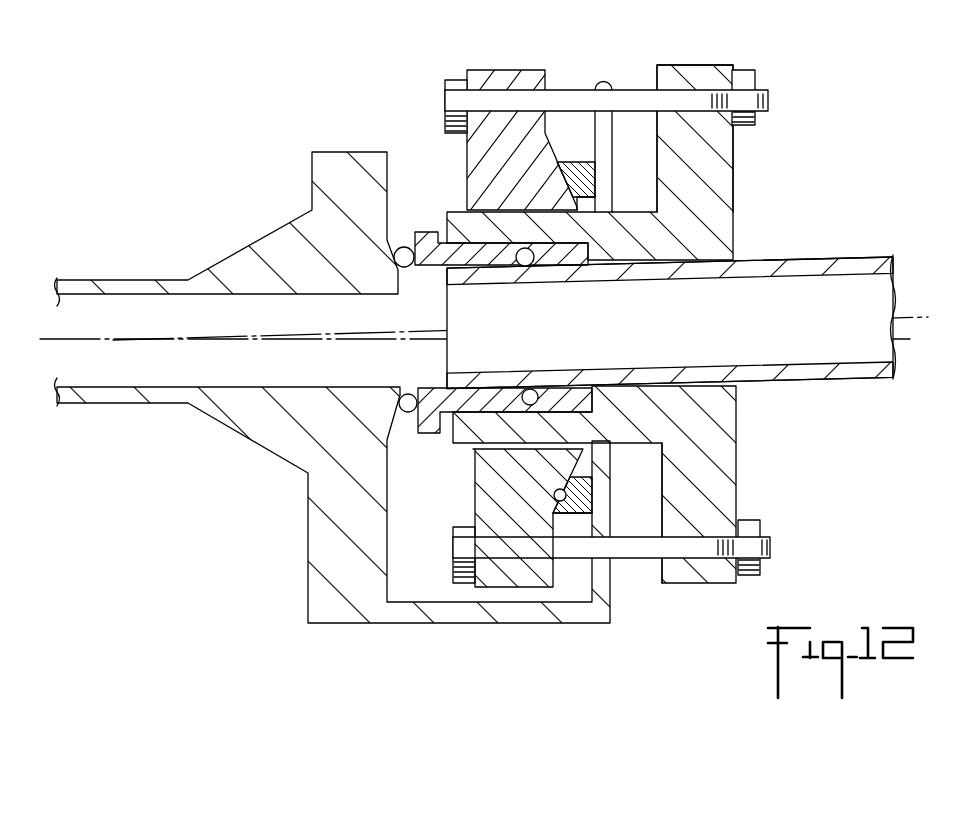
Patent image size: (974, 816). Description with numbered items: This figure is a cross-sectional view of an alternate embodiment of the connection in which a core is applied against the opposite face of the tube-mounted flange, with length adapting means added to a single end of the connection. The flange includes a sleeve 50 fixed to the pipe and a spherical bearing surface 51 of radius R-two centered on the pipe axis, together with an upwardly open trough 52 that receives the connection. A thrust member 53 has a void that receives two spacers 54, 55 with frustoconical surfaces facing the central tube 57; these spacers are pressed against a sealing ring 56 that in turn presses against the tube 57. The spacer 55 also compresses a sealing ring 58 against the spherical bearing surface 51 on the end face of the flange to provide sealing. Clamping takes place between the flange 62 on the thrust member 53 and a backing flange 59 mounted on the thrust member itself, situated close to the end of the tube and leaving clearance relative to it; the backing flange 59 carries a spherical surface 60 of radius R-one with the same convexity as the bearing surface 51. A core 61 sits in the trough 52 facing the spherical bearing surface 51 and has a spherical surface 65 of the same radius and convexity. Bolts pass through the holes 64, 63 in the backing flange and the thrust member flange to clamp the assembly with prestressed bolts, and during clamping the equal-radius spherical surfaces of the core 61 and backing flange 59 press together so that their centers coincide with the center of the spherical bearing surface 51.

The sleeve 50 is at (243, 254).
The spherical bearing surface 51 is at (402, 247).
The trough 52 is at (560, 614).
The thrust member 53 is at (727, 231).
The spacer 54 is at (580, 262).
The spacer 55 is at (478, 264).
The sealing ring 56 is at (525, 266).
The central tube 57 is at (846, 262).
The sealing ring 58 is at (408, 413).
The backing flange 59 is at (512, 588).
The spherical surface 60 is at (560, 154).
The core 61 is at (586, 488).
The flange 62 is at (695, 65).
The hole 63 is at (662, 92).
The hole 64 is at (506, 92).
The spherical surface 65 is at (573, 512).